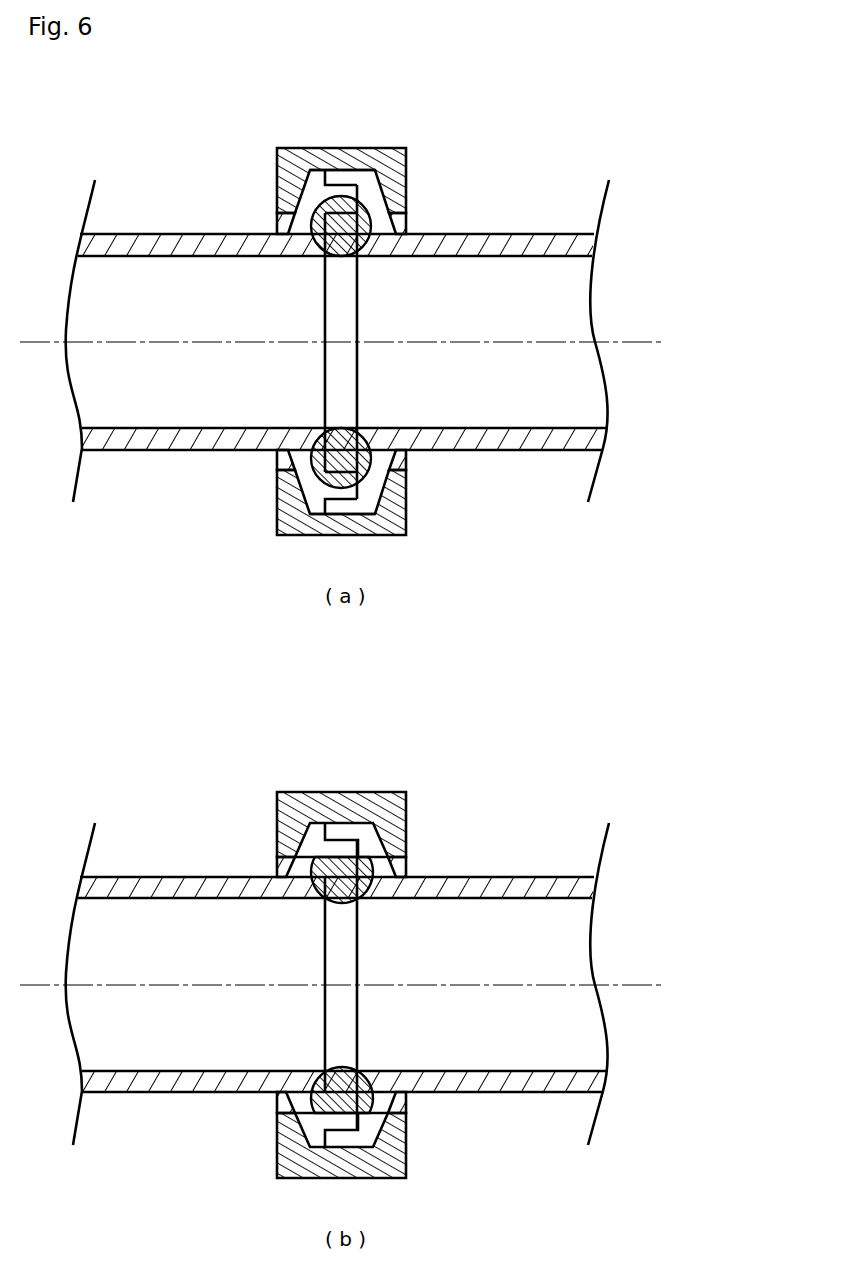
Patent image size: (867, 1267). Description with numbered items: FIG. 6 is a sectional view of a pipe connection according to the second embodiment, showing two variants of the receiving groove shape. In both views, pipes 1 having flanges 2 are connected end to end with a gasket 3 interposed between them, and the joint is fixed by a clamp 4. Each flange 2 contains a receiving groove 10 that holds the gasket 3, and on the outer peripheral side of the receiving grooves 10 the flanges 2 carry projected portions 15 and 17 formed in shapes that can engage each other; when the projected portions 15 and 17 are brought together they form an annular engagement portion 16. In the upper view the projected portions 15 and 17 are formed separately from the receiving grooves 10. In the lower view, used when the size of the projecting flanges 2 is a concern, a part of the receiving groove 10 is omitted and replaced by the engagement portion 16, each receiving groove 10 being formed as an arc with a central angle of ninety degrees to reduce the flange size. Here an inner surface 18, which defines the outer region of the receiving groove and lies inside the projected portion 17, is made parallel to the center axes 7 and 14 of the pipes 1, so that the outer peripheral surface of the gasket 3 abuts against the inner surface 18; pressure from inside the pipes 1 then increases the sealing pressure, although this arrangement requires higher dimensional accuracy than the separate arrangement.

The pipe 1 is at (337, 361).
The flange 2 is at (348, 339).
The gasket 3 is at (289, 359).
The clamp 4 is at (380, 509).
The center axis 7 is at (383, 954).
The receiving groove 10 is at (348, 180).
The center axis 14 is at (383, 954).
The projected portion 15 is at (351, 298).
The engagement portion 16 is at (378, 305).
The projected portion 17 is at (402, 310).
The inner surface 18 is at (373, 923).